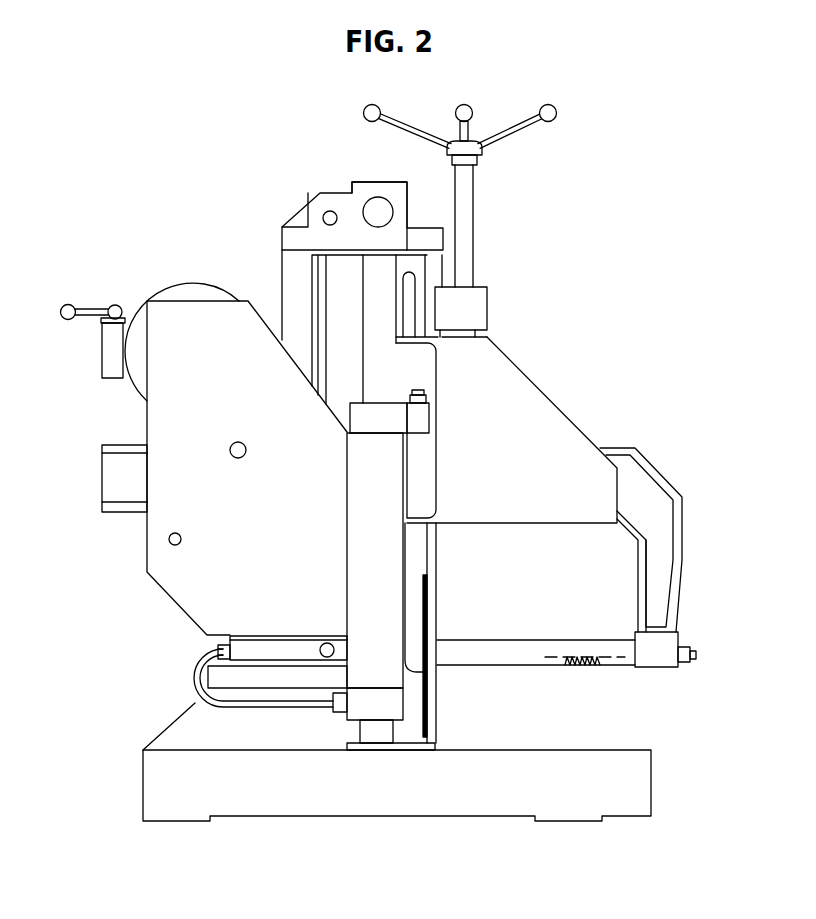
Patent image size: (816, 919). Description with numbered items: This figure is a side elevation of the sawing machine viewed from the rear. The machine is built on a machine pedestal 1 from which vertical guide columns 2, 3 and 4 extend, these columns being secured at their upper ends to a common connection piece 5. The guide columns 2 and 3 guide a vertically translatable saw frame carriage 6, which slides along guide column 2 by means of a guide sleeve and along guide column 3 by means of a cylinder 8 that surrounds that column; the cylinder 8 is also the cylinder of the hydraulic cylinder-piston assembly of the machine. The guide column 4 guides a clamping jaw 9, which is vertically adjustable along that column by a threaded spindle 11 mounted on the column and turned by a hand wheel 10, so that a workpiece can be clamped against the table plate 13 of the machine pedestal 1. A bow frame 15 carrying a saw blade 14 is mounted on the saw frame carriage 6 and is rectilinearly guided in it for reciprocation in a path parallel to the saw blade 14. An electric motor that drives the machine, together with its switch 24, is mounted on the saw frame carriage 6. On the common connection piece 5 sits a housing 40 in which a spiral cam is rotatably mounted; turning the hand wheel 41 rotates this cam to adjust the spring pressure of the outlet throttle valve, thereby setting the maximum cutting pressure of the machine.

The machine pedestal 1 is at (447, 797).
The guide column 2 is at (293, 292).
The guide column 3 is at (380, 273).
The guide column 4 is at (405, 287).
The common connection piece 5 is at (290, 240).
The saw frame carriage 6 is at (188, 588).
The cylinder 8 is at (360, 575).
The clamping jaw 9 is at (510, 403).
The hand wheel 10 is at (472, 150).
The threaded spindle 11 is at (470, 182).
The table plate 13 is at (588, 667).
The saw blade 14 is at (620, 650).
The bow frame 15 is at (657, 558).
The switch 24 is at (113, 370).
The housing 40 is at (398, 195).
The hand wheel 41 is at (368, 207).